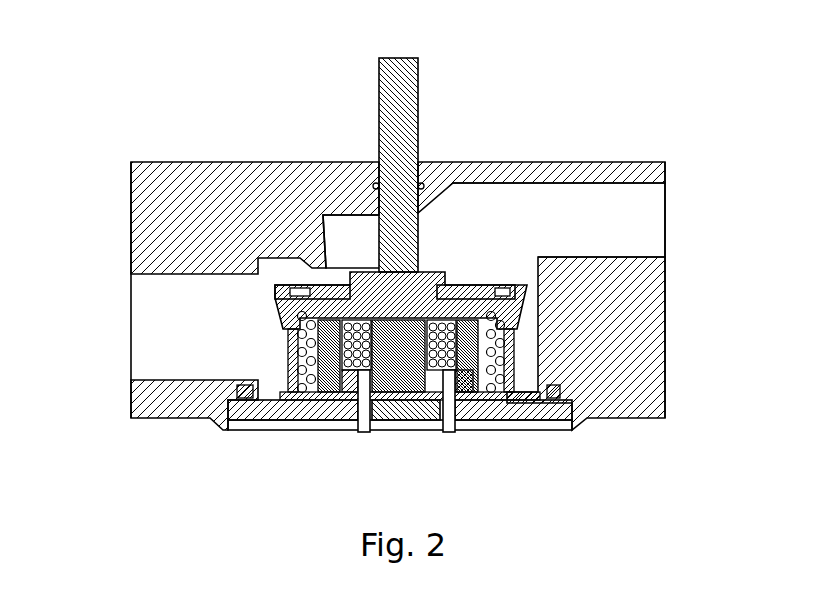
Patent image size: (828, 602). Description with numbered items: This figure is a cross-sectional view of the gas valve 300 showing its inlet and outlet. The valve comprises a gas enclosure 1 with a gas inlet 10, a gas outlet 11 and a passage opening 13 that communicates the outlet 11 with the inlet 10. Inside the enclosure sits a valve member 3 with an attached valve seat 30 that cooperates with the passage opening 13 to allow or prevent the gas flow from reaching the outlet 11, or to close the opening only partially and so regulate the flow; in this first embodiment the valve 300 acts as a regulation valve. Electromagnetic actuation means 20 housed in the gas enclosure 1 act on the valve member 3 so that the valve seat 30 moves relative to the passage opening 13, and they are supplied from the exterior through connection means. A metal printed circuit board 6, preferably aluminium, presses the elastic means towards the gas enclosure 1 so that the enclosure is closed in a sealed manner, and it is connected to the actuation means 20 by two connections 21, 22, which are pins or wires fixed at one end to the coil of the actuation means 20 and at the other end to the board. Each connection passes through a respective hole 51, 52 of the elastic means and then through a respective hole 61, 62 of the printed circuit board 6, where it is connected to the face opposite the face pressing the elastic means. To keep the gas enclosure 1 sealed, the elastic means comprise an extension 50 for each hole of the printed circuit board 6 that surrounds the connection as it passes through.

The gas valve 300 is at (127, 138).
The gas enclosure 1 is at (527, 337).
The gas inlet 10 is at (129, 323).
The gas outlet 11 is at (650, 218).
The passage opening 13 is at (335, 265).
The valve seat 30 is at (443, 273).
The valve member 3 is at (276, 298).
The actuation means 20 is at (281, 343).
The printed circuit board 6 is at (236, 412).
The hole of the printed circuit board 61 is at (345, 408).
The hole of the printed circuit board 62 is at (465, 412).
The extension of the elastic means 50 is at (439, 409).
The connection 21 is at (363, 432).
The connection 22 is at (450, 432).
The hole of the elastic means 51 is at (282, 403).
The hole of the elastic means 52 is at (547, 405).